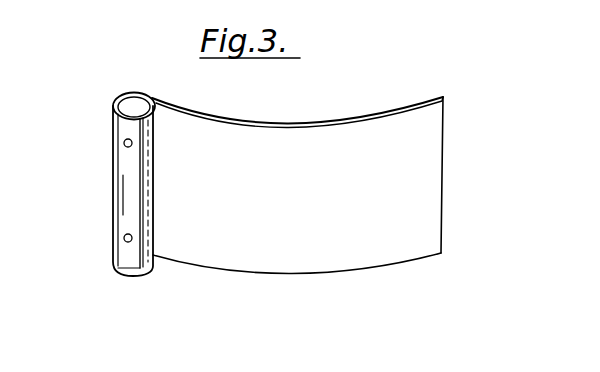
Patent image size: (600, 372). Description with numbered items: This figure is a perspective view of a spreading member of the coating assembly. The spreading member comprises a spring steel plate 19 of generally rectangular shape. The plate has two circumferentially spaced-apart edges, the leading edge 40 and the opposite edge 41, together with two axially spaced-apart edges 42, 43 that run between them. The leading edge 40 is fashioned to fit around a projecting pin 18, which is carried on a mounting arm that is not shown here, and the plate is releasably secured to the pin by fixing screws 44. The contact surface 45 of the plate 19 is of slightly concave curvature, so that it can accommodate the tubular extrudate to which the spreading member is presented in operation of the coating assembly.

The projecting pin 18 is at (133, 103).
The spring steel plate 19 is at (327, 194).
The leading edge 40 is at (133, 162).
The circumferentially spaced-apart edge 41 is at (443, 160).
The axially spaced-apart edge 42 is at (348, 272).
The axially spaced-apart edge 43 is at (297, 97).
The fixing screws 44 is at (124, 238).
The contact surface 45 is at (335, 122).